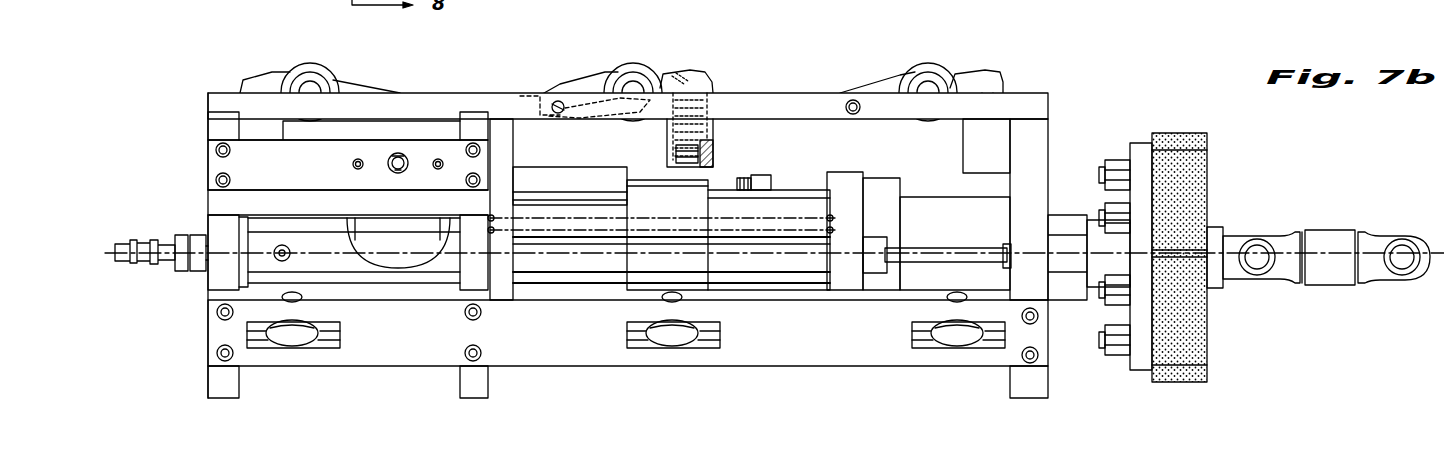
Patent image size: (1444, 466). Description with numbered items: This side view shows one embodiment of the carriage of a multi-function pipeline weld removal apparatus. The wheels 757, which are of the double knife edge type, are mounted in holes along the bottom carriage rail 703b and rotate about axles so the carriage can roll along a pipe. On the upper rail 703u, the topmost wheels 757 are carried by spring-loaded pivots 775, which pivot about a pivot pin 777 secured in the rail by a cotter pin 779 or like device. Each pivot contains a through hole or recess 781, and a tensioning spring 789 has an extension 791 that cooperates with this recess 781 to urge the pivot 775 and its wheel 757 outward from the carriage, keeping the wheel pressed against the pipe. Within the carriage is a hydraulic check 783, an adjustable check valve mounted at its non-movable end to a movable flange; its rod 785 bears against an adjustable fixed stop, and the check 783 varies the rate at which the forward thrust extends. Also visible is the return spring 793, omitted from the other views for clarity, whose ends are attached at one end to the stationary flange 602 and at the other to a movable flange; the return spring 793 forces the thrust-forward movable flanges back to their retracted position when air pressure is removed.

The stationary flange 602 is at (487, 290).
The upper rail 703u is at (1033, 103).
The bottom carriage rail 703b is at (738, 328).
The wheel 757 is at (643, 72).
The spring-loaded pivot 775 is at (985, 85).
The pivot pin 777 is at (853, 100).
The cotter pin 779 is at (562, 106).
The through hole or recess 781 is at (683, 72).
The hydraulic check 783 is at (755, 265).
The rod 785 is at (917, 273).
The tensioning spring 789 is at (700, 115).
The extension 791 is at (686, 82).
The return spring 793 is at (565, 232).